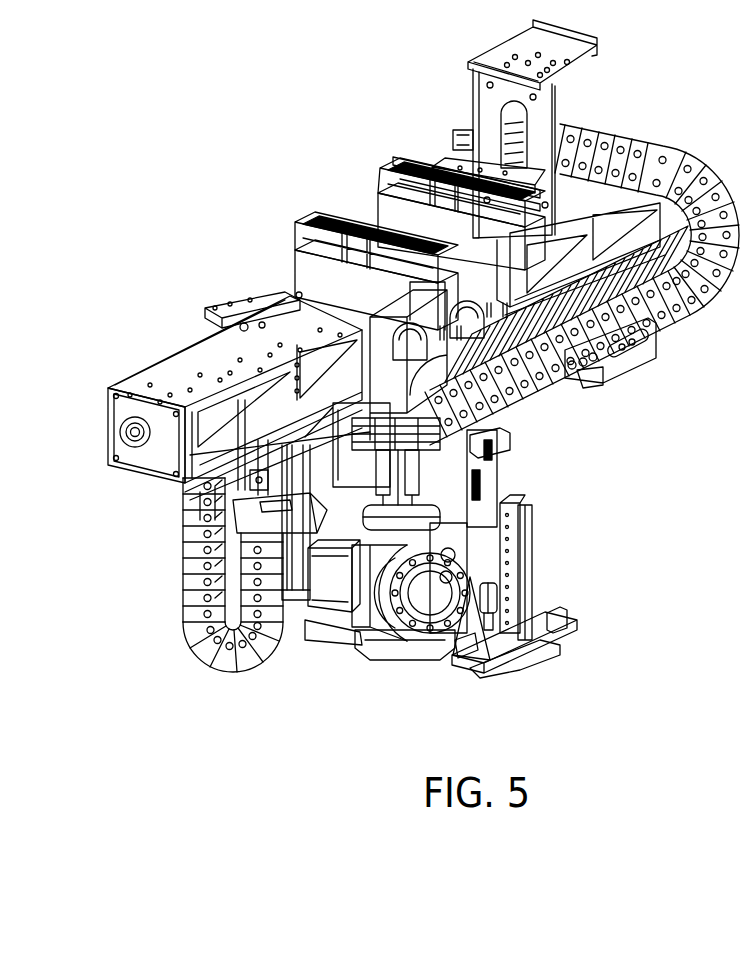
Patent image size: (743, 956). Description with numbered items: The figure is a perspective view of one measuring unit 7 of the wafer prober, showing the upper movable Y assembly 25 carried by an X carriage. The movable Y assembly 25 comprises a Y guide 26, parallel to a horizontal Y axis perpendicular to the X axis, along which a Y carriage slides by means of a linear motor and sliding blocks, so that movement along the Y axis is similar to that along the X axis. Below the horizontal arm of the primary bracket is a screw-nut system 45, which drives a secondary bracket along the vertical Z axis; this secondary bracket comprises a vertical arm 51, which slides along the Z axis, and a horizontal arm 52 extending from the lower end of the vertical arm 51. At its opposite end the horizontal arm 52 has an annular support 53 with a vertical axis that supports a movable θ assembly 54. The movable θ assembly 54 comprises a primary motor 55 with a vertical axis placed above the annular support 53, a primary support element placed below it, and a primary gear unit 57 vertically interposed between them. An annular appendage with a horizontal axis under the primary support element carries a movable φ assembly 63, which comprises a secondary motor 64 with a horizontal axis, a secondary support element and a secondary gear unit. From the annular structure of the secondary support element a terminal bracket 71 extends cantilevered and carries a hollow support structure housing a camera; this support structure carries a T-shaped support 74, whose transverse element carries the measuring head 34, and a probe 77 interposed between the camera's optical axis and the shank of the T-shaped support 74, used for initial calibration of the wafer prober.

The measuring unit 7 is at (254, 122).
The movable Y assembly 25 is at (256, 296).
The Y guide 26 is at (180, 363).
The measuring head 34 is at (570, 665).
The screw-nut system 45 is at (299, 597).
The vertical arm 51 is at (198, 530).
The horizontal arm 52 is at (200, 598).
The annular support 53 is at (518, 528).
The movable θ assembly 54 is at (503, 440).
The primary motor 55 is at (430, 483).
The primary gear unit 57 is at (377, 643).
The movable φ assembly 63 is at (313, 648).
The secondary motor 64 is at (343, 600).
The terminal bracket 71 is at (440, 648).
The T-shaped support 74 is at (540, 597).
The probe 77 is at (495, 592).